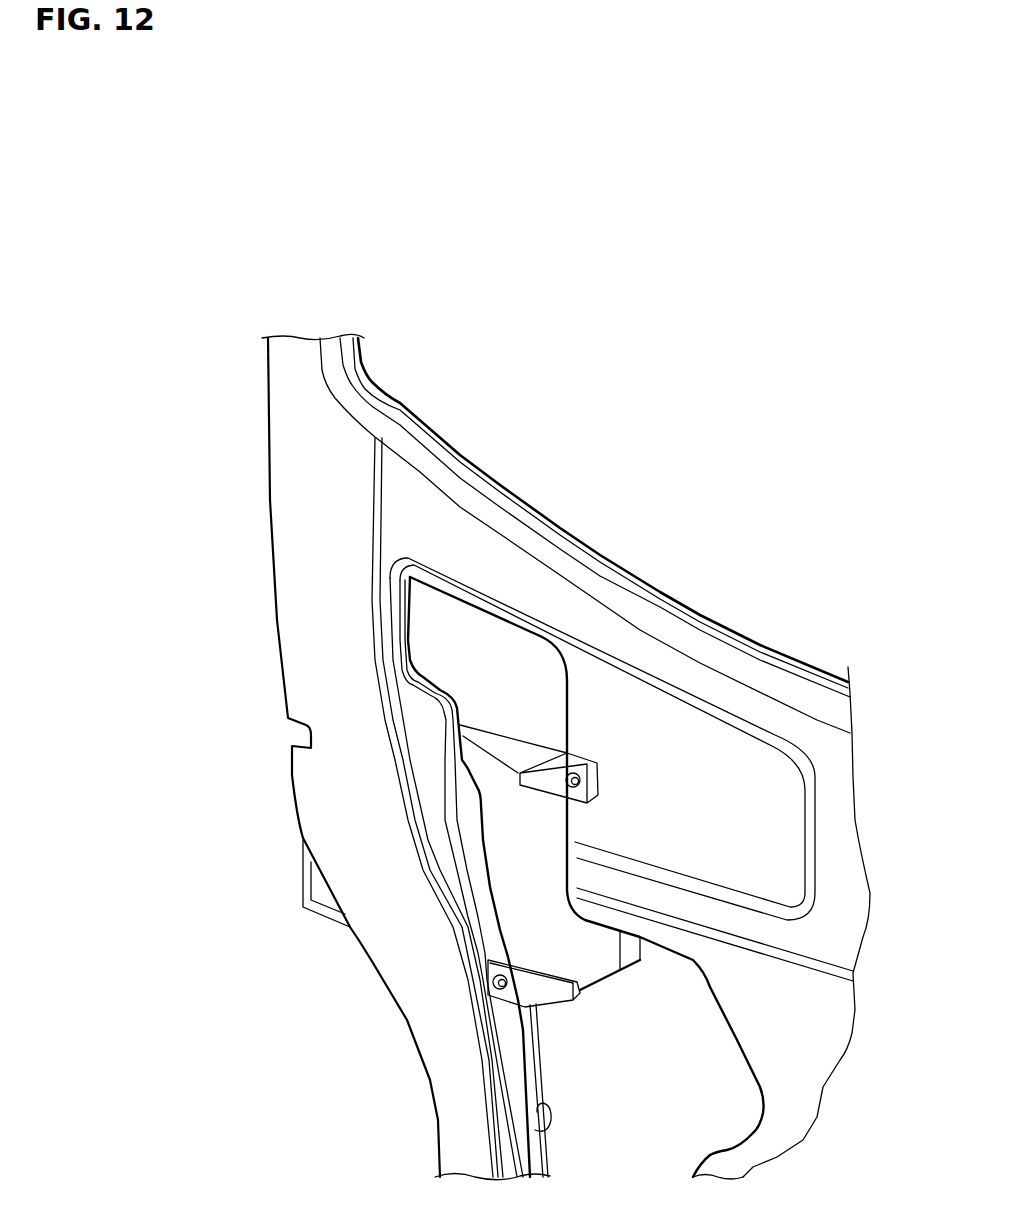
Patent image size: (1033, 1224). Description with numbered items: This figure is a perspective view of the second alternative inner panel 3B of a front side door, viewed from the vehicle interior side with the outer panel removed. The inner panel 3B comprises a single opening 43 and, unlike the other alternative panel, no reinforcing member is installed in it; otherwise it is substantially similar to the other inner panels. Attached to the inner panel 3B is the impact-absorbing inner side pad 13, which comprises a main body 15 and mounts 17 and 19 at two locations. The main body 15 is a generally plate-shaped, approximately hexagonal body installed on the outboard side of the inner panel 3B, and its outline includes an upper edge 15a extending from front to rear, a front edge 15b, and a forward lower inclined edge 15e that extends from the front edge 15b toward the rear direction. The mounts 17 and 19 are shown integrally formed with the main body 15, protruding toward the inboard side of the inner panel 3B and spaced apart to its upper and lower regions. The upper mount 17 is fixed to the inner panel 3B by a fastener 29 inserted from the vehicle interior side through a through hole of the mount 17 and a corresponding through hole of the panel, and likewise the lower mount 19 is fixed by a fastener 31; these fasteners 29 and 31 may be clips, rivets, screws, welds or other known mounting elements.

The inner panel 3B is at (300, 480).
The impact-absorbing inner side pad 13 is at (616, 978).
The main body 15 is at (567, 950).
The upper edge 15a is at (518, 742).
The front edge 15b is at (640, 945).
The forward lower inclined edge 15e is at (600, 987).
The mount 17 is at (578, 756).
The mount 19 is at (523, 990).
The fastener 29 is at (597, 787).
The fastener 31 is at (480, 987).
The single opening 43 is at (535, 1130).